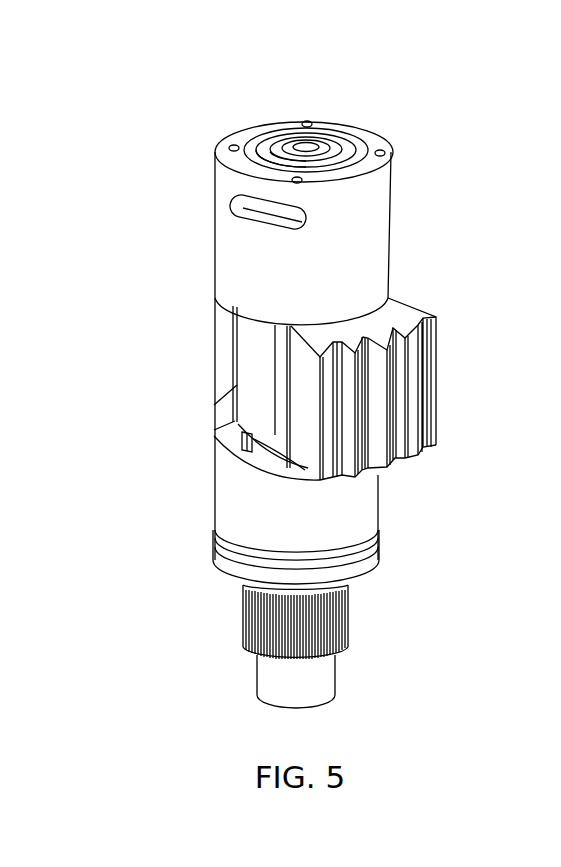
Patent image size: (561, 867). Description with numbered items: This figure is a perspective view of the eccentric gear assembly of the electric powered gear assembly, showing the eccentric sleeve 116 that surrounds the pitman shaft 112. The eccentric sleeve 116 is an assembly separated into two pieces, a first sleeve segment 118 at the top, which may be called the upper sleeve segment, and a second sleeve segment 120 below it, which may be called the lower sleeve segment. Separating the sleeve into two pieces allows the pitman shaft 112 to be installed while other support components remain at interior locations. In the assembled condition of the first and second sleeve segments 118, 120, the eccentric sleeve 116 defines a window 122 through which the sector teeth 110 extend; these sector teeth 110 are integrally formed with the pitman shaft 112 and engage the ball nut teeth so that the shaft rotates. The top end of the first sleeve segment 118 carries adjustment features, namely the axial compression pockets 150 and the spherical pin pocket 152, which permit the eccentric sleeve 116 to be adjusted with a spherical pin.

The eccentric sleeve 116 is at (183, 343).
The first sleeve segment 118 is at (237, 260).
The axial compression pockets 150 is at (386, 153).
The spherical pin pocket 152 is at (229, 213).
The sector teeth 110 is at (425, 353).
The window 122 is at (233, 449).
The second sleeve segment 120 is at (368, 500).
The pitman shaft 112 is at (256, 620).